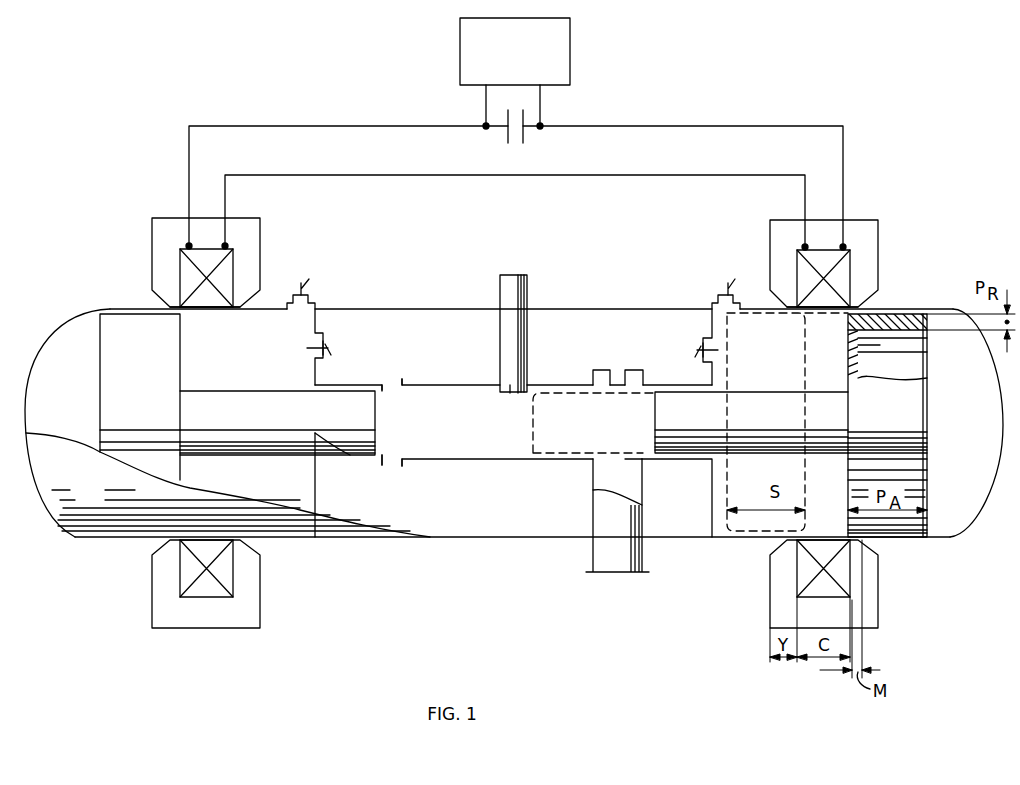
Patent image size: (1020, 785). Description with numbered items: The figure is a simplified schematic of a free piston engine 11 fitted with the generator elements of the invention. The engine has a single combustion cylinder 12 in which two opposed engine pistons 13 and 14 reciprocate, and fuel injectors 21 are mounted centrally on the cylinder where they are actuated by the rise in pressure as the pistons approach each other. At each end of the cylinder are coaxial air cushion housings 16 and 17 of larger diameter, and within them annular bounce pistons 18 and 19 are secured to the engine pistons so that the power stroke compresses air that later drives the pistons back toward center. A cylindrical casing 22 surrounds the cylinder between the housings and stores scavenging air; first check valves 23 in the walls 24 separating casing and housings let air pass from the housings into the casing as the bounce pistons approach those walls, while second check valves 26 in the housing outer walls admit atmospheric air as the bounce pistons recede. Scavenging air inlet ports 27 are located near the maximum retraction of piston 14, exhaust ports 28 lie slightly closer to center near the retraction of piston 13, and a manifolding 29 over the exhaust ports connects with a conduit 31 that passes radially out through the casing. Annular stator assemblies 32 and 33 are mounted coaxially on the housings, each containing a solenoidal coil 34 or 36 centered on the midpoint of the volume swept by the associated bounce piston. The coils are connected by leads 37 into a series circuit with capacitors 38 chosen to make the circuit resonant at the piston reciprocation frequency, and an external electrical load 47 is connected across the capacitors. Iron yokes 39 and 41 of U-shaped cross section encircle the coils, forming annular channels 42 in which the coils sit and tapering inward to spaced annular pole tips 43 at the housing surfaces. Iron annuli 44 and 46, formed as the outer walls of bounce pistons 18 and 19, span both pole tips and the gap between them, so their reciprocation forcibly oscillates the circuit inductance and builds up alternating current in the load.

The free piston engine 11 is at (398, 545).
The combustion cylinder 12 is at (442, 385).
The engine piston 13 is at (731, 428).
The engine piston 14 is at (256, 420).
The air cushion housing 16 is at (947, 535).
The air cushion housing 17 is at (76, 502).
The bounce piston 18 is at (940, 409).
The bounce piston 19 is at (92, 382).
The fuel injector 21 is at (531, 295).
The cylindrical casing 22 is at (490, 537).
The first check valve 23 is at (328, 348).
The wall 24 is at (318, 316).
The second check valve 26 is at (308, 283).
The scavenging air inlet port 27 is at (405, 384).
The exhaust port 28 is at (616, 384).
The manifolding 29 is at (630, 373).
The conduit 31 is at (642, 552).
The stator assembly 32 is at (890, 242).
The stator assembly 33 is at (138, 267).
The solenoidal coil 34 is at (845, 271).
The solenoidal coil 36 is at (210, 295).
The leads 37 is at (266, 128).
The capacitor 38 is at (524, 131).
The iron yoke 39 is at (862, 220).
The iron yoke 41 is at (170, 218).
The annular channel 42 is at (228, 268).
The pole tip 43 is at (173, 309).
The iron annulus 44 is at (884, 328).
The iron annulus 46 is at (131, 367).
The external electrical load 47 is at (571, 60).